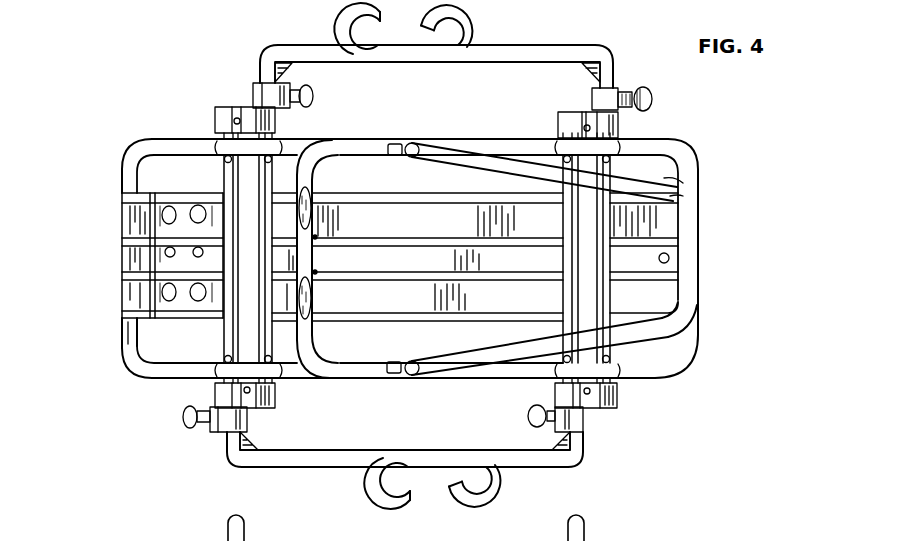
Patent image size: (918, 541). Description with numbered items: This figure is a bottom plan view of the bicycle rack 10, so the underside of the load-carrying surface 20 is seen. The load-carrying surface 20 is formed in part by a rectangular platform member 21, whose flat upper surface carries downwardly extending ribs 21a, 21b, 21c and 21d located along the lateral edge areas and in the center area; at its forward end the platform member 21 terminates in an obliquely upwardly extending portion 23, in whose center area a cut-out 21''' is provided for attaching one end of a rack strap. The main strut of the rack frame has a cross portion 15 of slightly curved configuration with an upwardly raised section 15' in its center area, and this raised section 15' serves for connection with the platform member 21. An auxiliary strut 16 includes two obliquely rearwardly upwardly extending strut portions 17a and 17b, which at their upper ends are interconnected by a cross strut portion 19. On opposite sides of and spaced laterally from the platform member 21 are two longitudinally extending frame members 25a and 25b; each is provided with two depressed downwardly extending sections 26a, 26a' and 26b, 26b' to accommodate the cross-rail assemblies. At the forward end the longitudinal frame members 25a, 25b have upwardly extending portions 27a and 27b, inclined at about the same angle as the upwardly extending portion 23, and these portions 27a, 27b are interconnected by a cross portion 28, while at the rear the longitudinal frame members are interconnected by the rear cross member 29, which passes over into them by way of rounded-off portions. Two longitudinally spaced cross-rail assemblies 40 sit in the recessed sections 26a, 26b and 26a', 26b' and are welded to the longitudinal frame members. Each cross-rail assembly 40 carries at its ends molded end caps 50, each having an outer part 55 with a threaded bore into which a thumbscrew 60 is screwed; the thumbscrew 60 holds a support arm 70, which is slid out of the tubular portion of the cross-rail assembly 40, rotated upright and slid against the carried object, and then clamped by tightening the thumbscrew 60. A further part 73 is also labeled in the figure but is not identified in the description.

The bicycle rack 10 is at (772, 190).
The cross portion 15 is at (332, 252).
The raised section 15' is at (343, 253).
The auxiliary strut 16 is at (640, 338).
The obliquely rearwardly upwardly extending strut portion 17a is at (450, 160).
The obliquely rearwardly upwardly extending strut portion 17b is at (493, 352).
The cross strut portion 19 is at (688, 261).
The load-carrying surface 20 is at (163, 324).
The platform member 21 is at (471, 200).
The cut-out 21''' is at (94, 255).
The downwardly extending rib 21a is at (212, 198).
The downwardly extending rib 21b is at (440, 238).
The downwardly extending rib 21c is at (541, 272).
The downwardly extending rib 21d is at (398, 326).
The obliquely upwardly extending portion 23 is at (143, 221).
The longitudinally extending frame member 25a is at (318, 140).
The longitudinally extending frame member 25b is at (315, 375).
The depressed downwardly extending section 26a is at (227, 87).
The depressed downwardly extending section 26a' is at (213, 369).
The depressed downwardly extending section 26b is at (707, 176).
The depressed downwardly extending section 26b' is at (613, 421).
The upwardly extending portion 27a is at (160, 143).
The upwardly extending portion 27b is at (160, 373).
The cross portion 28 is at (130, 328).
The rear cross member 29 is at (676, 324).
The cross-rail assembly 40 is at (278, 337).
The end cap 50 is at (622, 128).
The outer part 55 is at (592, 100).
The thumbscrew 60 is at (672, 73).
The support arm 70 is at (512, 44).
The hanger hooks 73 is at (340, 14).